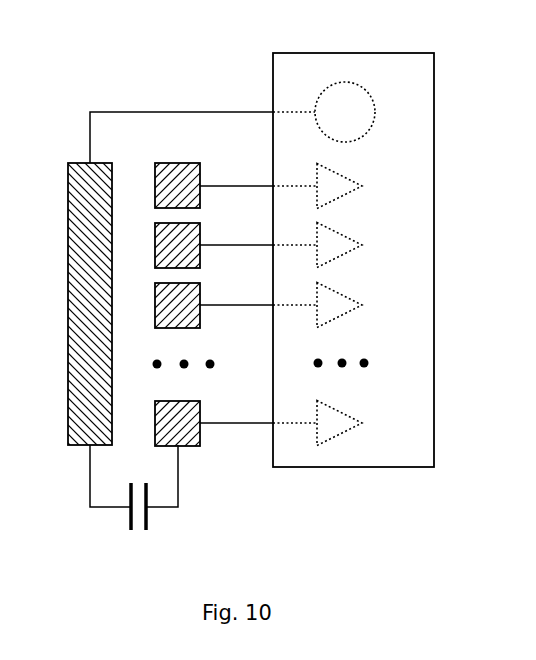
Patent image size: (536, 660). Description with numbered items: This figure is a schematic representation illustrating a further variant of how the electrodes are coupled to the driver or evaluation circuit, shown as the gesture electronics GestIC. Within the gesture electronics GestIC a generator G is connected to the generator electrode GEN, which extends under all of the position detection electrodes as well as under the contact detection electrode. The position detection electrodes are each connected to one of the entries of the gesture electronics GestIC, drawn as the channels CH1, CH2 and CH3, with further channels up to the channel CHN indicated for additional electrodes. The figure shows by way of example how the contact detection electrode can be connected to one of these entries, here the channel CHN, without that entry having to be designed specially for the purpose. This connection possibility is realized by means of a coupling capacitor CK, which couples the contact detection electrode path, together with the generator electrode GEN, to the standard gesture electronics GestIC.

The gesture electronics GestIC is at (353, 260).
The generator G is at (324, 112).
The generator electrode GEN is at (156, 299).
The channel 1 CH1 is at (332, 185).
The channel 2 CH2 is at (332, 244).
The channel 3 CH3 is at (332, 303).
The channel N CHN is at (331, 422).
The coupling capacitor CK is at (134, 502).